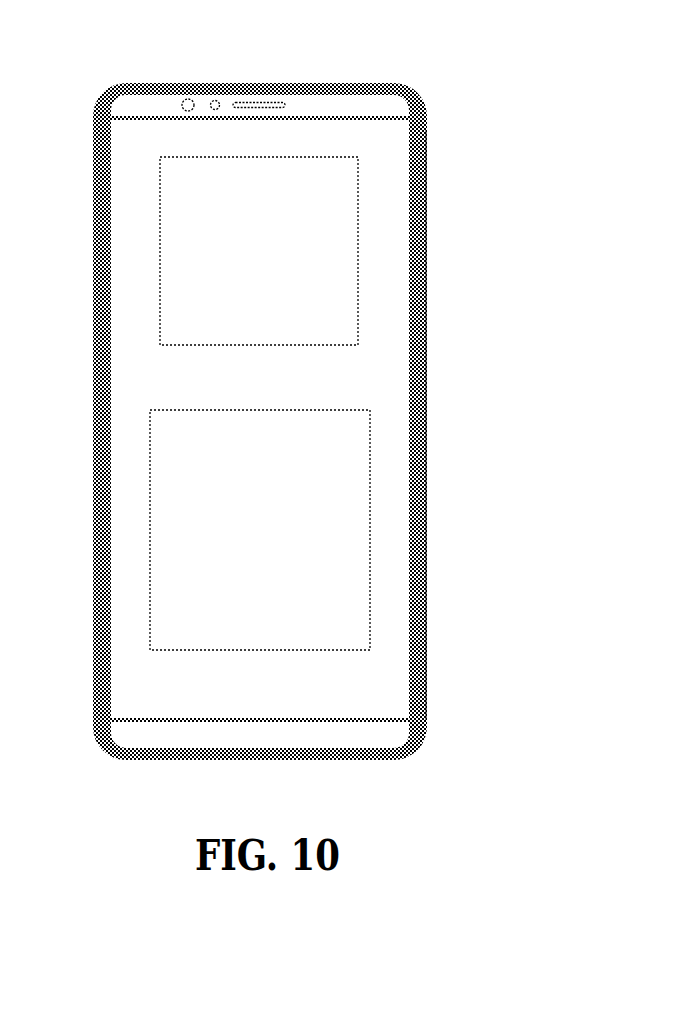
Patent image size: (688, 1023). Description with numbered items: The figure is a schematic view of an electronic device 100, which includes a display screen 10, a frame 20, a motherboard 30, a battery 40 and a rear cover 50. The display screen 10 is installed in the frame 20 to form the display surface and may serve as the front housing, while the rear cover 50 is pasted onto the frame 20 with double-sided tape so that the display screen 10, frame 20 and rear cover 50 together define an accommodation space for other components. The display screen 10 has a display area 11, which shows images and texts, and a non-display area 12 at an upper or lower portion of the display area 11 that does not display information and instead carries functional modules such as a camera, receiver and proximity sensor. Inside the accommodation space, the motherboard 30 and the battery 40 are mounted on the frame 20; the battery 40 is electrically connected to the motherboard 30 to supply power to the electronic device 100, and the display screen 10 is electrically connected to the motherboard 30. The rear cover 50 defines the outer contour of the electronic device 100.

The electronic device 100 is at (171, 43).
The display screen 10 is at (393, 140).
The display area 11 is at (143, 383).
The non-display area 12 is at (366, 101).
The frame 20 is at (422, 182).
The motherboard 30 is at (360, 283).
The battery 40 is at (372, 498).
The rear cover 50 is at (420, 640).